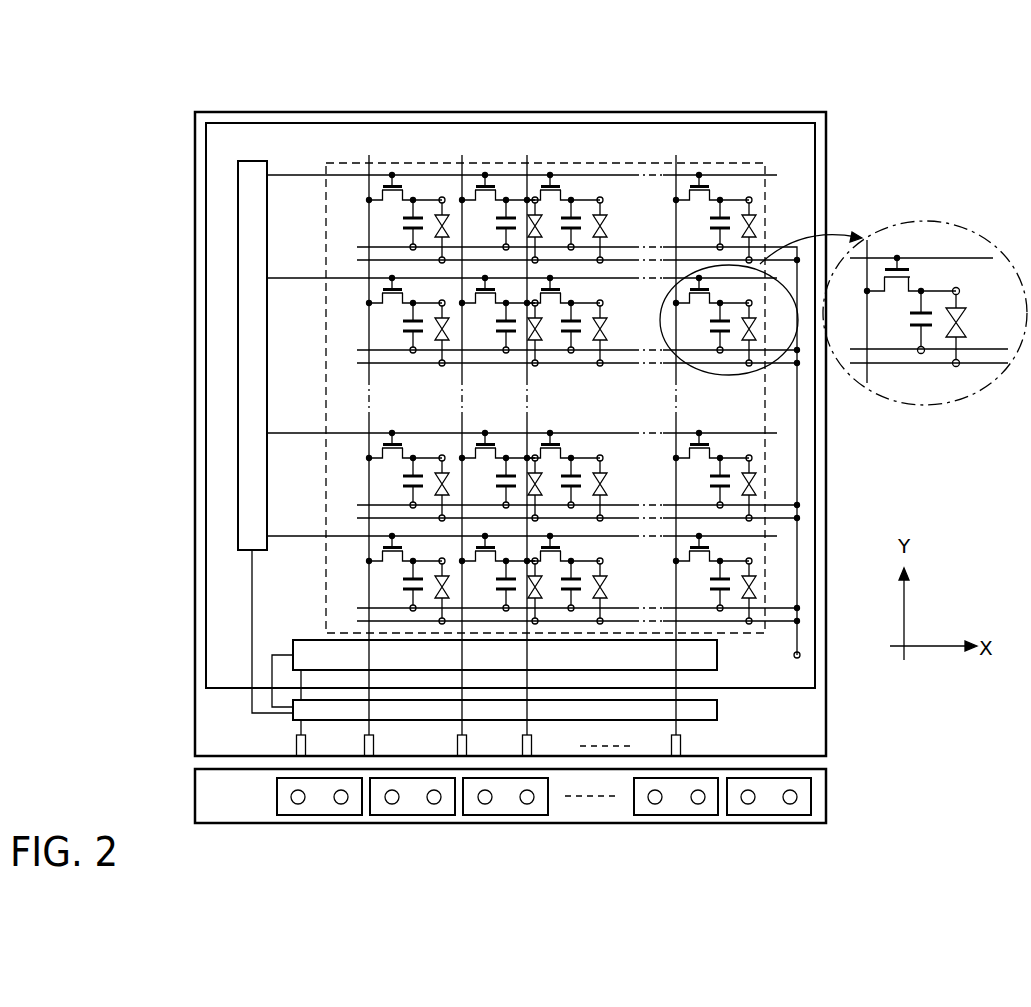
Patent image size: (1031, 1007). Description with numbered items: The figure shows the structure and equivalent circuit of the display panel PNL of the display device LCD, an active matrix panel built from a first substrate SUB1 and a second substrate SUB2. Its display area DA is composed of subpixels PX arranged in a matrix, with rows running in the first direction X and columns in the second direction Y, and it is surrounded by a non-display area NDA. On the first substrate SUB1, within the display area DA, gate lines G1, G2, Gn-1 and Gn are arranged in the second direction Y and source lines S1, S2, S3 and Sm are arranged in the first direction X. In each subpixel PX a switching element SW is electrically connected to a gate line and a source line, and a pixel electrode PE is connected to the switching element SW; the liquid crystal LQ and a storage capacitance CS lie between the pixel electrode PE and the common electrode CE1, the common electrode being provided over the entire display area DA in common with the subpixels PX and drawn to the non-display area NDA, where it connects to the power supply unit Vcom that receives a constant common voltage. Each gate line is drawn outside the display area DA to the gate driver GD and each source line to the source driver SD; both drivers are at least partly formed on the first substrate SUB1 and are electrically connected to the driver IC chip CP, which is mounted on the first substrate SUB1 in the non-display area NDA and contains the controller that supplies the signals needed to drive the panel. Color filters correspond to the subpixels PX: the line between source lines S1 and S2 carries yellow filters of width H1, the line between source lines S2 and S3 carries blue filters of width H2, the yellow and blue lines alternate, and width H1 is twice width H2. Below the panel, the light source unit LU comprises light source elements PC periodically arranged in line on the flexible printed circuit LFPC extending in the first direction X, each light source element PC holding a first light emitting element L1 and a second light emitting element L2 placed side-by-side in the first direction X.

The display device LCD is at (954, 88).
The display panel PNL is at (829, 107).
The first substrate SUB1 is at (827, 139).
The second substrate SUB2 is at (817, 177).
The non-display area NDA is at (719, 140).
The display area DA is at (731, 163).
The subpixel PX is at (952, 222).
The gate driver GD is at (245, 551).
The source driver SD is at (307, 639).
The driver IC chip CP is at (292, 719).
The gate line G1 is at (522, 163).
The gate line G2 is at (934, 247).
The gate line Gn-1 is at (522, 421).
The gate line Gn is at (522, 524).
The source line S1 is at (369, 443).
The source line S2 is at (461, 443).
The source line S3 is at (526, 443).
The source line Sm is at (855, 410).
The power supply unit Vcom is at (794, 656).
The switching element SW is at (883, 287).
The pixel electrode PE is at (959, 291).
The storage capacitance CS is at (910, 322).
The liquid crystal layer LQ is at (967, 323).
The common electrode CE1 is at (953, 366).
The light source unit LU is at (189, 798).
The flexible printed circuit LFPC is at (227, 812).
The light source element PC is at (352, 804).
The first light emitting element L1 is at (298, 804).
The second light emitting element L2 is at (341, 804).
The width of yellow color filter H1 is at (369, 105).
The width of blue color filter H2 is at (527, 105).